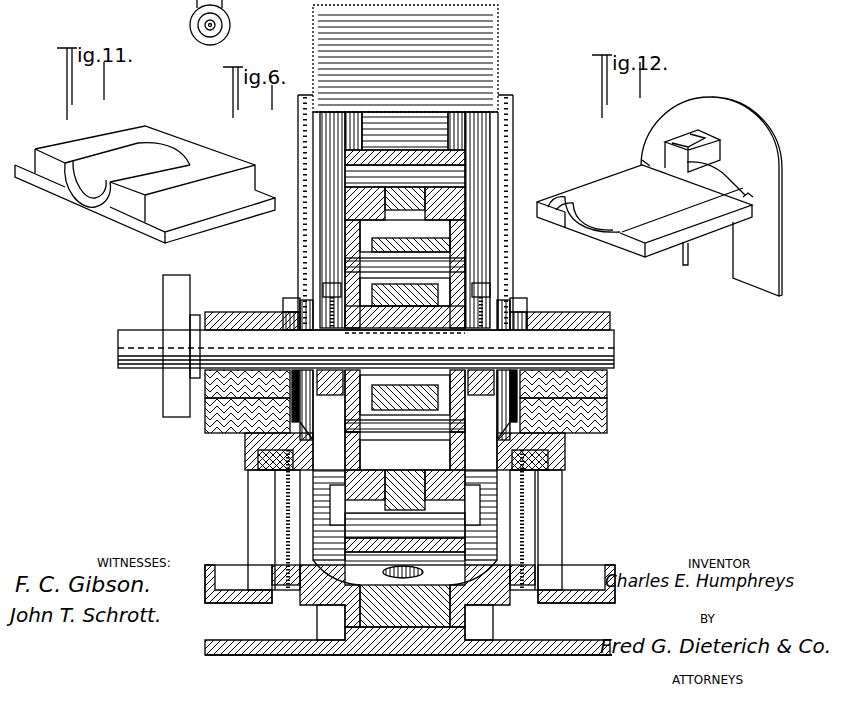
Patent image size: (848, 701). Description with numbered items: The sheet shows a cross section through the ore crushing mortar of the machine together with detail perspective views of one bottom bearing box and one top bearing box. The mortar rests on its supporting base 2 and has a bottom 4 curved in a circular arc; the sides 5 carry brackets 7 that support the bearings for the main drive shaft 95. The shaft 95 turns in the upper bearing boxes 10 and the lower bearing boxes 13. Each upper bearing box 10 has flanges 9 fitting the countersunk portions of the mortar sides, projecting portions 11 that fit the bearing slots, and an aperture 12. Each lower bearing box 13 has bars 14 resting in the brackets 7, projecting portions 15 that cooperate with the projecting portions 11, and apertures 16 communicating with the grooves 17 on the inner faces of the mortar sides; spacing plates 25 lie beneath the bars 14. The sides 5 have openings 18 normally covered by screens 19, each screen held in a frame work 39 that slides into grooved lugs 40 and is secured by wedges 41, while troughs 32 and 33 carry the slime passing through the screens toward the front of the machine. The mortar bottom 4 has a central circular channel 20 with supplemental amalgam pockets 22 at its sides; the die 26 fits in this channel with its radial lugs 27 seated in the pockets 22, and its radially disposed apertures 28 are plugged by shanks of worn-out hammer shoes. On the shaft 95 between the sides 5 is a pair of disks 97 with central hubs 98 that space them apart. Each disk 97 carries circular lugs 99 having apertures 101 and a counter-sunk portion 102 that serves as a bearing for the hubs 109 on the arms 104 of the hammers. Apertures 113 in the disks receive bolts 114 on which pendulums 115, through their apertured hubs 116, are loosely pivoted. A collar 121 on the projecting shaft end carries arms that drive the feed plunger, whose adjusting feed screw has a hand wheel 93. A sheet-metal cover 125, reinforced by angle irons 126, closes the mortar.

In FIG. 6, the supporting base 2 is at (550, 650).
In FIG. 6, the bottom 4 is at (393, 648).
In FIG. 6, the sides 5 is at (465, 450).
In FIG. 6, the brackets 7 is at (582, 437).
In FIG. 6, the flanges 9 is at (192, 25).
In FIG. 12, the flanges 9 is at (740, 256).
In FIG. 6, the upper bearing boxes 10 is at (568, 311).
In FIG. 12, the upper bearing boxes 10 is at (618, 187).
In FIG. 12, the projecting portions 11 is at (752, 198).
In FIG. 6, the aperture 12 is at (504, 328).
In FIG. 6, the lower bearing boxes 13 is at (638, 372).
In FIG. 11, the lower bearing boxes 13 is at (145, 163).
In FIG. 11, the bars 14 is at (236, 225).
In FIG. 11, the projecting portions 15 is at (247, 160).
In FIG. 6, the apertures 16 is at (515, 372).
In FIG. 6, the grooves 17 is at (405, 420).
In FIG. 6, the openings 18 is at (490, 490).
In FIG. 6, the screens 19 is at (580, 516).
In FIG. 6, the central circular channel 20 is at (430, 627).
In FIG. 6, the supplemental amalgam pockets 22 is at (430, 528).
In FIG. 6, the spacing plates 25 is at (622, 397).
In FIG. 6, the die 26 is at (405, 606).
In FIG. 6, the radial lugs 27 is at (616, 571).
In FIG. 6, the radially disposed apertures 28 is at (423, 570).
In FIG. 6, the trough 32 is at (230, 565).
In FIG. 6, the trough 33 is at (582, 575).
In FIG. 6, the frame work 39 is at (522, 588).
In FIG. 6, the grooved lugs 40 is at (590, 466).
In FIG. 6, the wedges 41 is at (580, 455).
In FIG. 6, the hand wheel 93 is at (232, 20).
In FIG. 6, the main drive shaft 95 is at (632, 347).
In FIG. 6, the disks 97 is at (490, 226).
In FIG. 6, the hubs 98 is at (395, 368).
In FIG. 6, the lugs 99 is at (425, 485).
In FIG. 6, the apertures 101 is at (458, 150).
In FIG. 6, the counter-sunk portion 102 is at (405, 203).
In FIG. 6, the arms 104 is at (405, 348).
In FIG. 6, the hubs 109 is at (405, 351).
In FIG. 6, the apertures 113 is at (486, 272).
In FIG. 6, the bolts 114 is at (405, 346).
In FIG. 6, the pendulums 115 is at (405, 355).
In FIG. 6, the apertured hubs 116 is at (372, 242).
In FIG. 6, the collar 121 is at (172, 368).
In FIG. 6, the cover 125 is at (499, 38).
In FIG. 6, the angle irons 126 is at (515, 118).